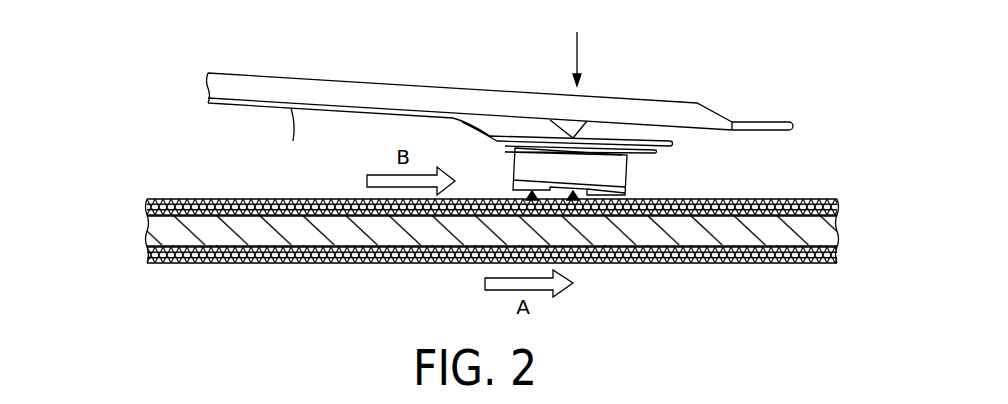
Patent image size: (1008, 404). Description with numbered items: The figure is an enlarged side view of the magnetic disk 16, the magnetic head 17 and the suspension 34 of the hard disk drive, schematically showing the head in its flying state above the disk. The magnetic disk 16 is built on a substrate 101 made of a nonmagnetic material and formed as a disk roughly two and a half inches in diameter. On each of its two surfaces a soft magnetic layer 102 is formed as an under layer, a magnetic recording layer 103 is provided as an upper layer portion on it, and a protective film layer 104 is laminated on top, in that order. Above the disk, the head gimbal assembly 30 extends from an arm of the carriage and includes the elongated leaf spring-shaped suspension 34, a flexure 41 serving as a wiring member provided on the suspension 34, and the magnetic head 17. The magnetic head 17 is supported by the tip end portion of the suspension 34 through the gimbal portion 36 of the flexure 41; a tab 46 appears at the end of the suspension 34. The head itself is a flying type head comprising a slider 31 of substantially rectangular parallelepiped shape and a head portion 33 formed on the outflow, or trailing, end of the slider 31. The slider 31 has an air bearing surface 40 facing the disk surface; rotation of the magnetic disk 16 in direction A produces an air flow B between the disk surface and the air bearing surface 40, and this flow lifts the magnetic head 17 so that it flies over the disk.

The magnetic disk 16 is at (458, 214).
The magnetic head 17 is at (573, 206).
The head gimbal assembly 30 is at (501, 105).
The slider 31 is at (588, 162).
The head portion 33 is at (620, 168).
The suspension 34 is at (307, 88).
The gimbal portion 36 is at (512, 128).
The air bearing surface 40 is at (530, 203).
The flexure 41 is at (291, 136).
The end tab 46 is at (767, 121).
The substrate 101 is at (267, 240).
The soft magnetic layer 102 is at (147, 217).
The magnetic recording layer 103 is at (231, 198).
The protective film layer 104 is at (165, 198).